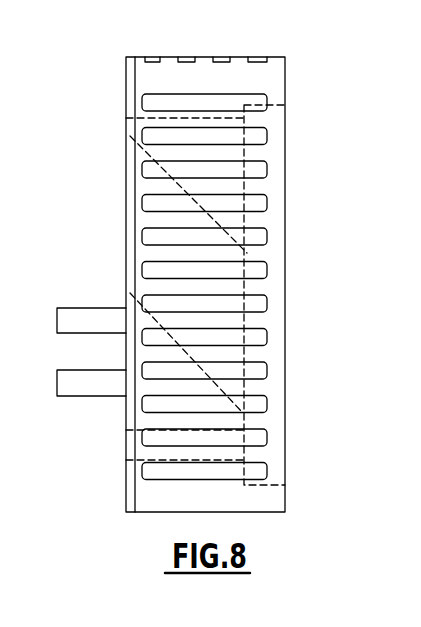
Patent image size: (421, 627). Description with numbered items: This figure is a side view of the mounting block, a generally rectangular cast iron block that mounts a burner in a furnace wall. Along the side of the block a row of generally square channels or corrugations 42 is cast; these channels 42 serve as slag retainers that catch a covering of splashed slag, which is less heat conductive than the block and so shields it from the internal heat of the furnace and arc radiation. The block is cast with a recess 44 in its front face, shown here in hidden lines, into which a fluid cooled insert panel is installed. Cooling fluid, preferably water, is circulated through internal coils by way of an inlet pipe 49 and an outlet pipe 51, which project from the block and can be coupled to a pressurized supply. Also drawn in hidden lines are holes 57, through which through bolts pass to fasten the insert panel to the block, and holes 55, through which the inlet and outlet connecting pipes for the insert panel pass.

The channels or corrugations 42 is at (215, 57).
The recess 44 is at (275, 152).
The inlet pipe 49 is at (75, 308).
The outlet pipe 51 is at (78, 370).
The holes 55 is at (128, 448).
The holes 57 is at (128, 130).